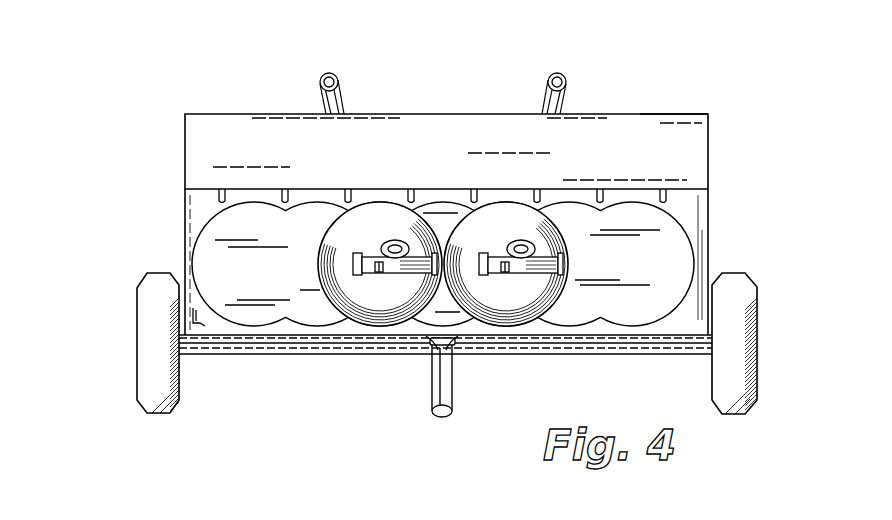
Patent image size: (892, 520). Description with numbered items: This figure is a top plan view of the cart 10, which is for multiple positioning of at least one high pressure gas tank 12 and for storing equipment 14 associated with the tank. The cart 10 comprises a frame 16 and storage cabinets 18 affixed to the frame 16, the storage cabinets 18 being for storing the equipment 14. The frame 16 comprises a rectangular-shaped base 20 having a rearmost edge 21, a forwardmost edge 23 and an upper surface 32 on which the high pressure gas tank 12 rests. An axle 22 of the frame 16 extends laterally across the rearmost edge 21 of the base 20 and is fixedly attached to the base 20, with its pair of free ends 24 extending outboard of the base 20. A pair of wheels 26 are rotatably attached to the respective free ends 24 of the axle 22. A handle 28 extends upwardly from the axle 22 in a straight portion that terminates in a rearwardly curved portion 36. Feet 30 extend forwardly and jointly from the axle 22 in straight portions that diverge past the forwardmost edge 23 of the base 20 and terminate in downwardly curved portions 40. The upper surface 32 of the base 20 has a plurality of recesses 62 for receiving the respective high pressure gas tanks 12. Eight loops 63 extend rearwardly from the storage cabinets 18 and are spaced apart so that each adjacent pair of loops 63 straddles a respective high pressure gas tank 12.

The cart 10 is at (142, 64).
The high pressure gas tank 12 is at (521, 297).
The equipment 14 is at (405, 141).
The frame 16 is at (236, 355).
The storage cabinets 18 is at (612, 143).
The base 20 is at (186, 202).
The rearmost edge 21 is at (585, 340).
The axle 22 is at (131, 323).
The forwardmost edge 23 is at (664, 114).
The free ends 24 is at (759, 330).
The wheels 26 is at (131, 342).
The handle 28 is at (424, 362).
The feet 30 is at (311, 88).
The upper surface 32 is at (192, 309).
The rearwardly curved portion 36 is at (451, 346).
The downwardly curved portions 40 is at (443, 93).
The recesses 62 is at (690, 268).
The loops 63 is at (285, 188).